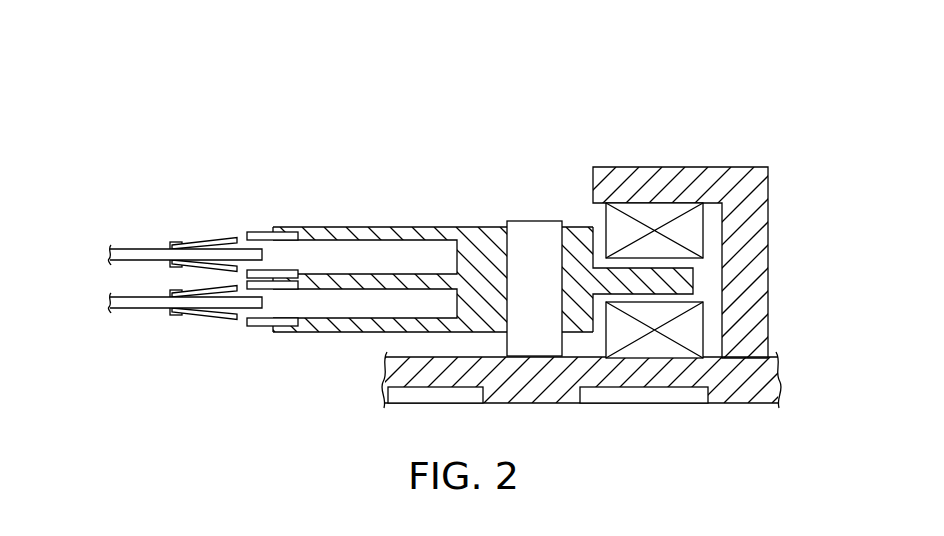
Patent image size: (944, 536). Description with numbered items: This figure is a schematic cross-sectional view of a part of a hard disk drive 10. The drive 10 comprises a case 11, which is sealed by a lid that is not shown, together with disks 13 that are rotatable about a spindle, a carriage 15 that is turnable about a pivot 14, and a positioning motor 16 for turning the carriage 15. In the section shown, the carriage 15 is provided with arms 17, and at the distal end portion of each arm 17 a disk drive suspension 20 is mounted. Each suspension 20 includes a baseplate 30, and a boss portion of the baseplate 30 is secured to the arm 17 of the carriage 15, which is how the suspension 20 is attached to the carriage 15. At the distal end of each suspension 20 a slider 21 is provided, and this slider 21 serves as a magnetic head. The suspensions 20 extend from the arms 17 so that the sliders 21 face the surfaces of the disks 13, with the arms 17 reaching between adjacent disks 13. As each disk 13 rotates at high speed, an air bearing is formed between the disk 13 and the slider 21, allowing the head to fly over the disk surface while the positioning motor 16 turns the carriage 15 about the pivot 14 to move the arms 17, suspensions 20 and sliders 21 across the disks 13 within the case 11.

The hard disk drive 10 is at (645, 126).
The case 11 is at (735, 404).
The disk 13 is at (122, 251).
The pivot 14 is at (533, 228).
The carriage 15 is at (475, 269).
The positioning motor 16 is at (653, 348).
The arm 17 is at (329, 227).
The disk drive suspension 20 is at (214, 238).
The slider 21 is at (164, 243).
The baseplate 30 is at (261, 232).